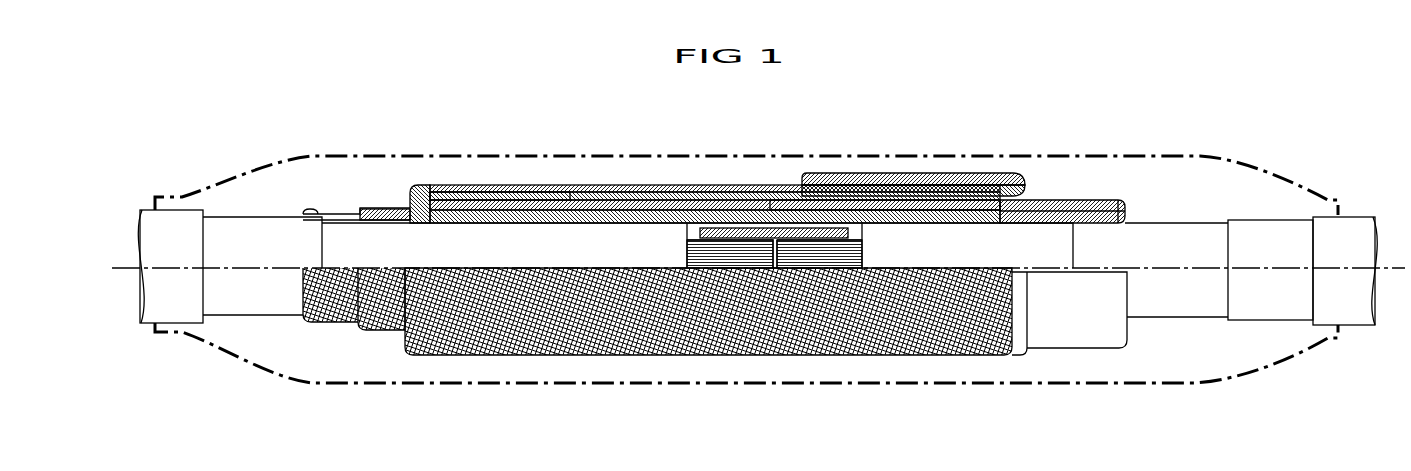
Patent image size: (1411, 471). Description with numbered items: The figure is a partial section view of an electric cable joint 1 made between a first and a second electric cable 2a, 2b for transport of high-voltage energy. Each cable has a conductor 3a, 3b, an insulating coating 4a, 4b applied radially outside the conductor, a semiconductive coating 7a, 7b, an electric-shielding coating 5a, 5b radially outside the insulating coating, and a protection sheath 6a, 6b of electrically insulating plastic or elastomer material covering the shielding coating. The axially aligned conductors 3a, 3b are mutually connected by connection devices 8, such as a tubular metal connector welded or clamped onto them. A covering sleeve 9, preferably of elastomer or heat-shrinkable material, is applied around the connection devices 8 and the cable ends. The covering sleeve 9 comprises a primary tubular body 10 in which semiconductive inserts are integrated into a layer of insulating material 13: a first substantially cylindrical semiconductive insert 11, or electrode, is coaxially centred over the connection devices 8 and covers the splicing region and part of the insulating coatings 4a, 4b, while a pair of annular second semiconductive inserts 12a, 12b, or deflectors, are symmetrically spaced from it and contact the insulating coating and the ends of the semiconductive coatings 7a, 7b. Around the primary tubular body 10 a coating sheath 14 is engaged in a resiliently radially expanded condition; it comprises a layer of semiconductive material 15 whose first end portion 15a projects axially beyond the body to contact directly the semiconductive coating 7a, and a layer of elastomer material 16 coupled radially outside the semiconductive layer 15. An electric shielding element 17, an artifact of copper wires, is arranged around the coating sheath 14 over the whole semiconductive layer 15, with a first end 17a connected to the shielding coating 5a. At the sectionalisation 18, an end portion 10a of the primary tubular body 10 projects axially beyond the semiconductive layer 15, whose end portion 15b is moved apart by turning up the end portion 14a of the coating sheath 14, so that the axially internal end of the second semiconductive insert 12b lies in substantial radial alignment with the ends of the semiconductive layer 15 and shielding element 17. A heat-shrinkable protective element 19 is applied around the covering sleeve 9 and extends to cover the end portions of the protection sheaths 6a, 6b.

The electric cable joint 1 is at (226, 137).
The first electric cable 2a is at (146, 229).
The second electric cable 2b is at (1353, 219).
The conductor 3a is at (733, 262).
The conductor 3b is at (837, 260).
The insulating coating 4a is at (630, 253).
The insulating coating 4b is at (1037, 245).
The electric-shielding coating 5a is at (252, 293).
The electric-shielding coating 5b is at (1263, 298).
The protection sheath 6a is at (175, 300).
The protection sheath 6b is at (1353, 308).
The semiconductive coating 7a is at (336, 238).
The semiconductive coating 7b is at (1177, 300).
The connection devices 8 is at (736, 205).
The covering sleeve 9 is at (503, 368).
The primary tubular body 10 is at (571, 235).
The end portion of the primary tubular body 10a is at (1085, 205).
The first semiconductive insert 11 is at (613, 210).
The second semiconductive insert 12a is at (492, 197).
The second semiconductive insert 12b is at (1125, 203).
The layer of insulating material 13 is at (778, 195).
The coating sheath 14 is at (516, 222).
The end portion of the coating sheath 14a is at (882, 178).
The layer of semiconductive material 15 is at (556, 190).
The first end portion of the semiconductive layer 15a is at (383, 210).
The end portion of the semiconductive layer 15b is at (985, 180).
The layer of elastomer material 16 is at (648, 195).
The electric shielding element 17 is at (678, 190).
The first end of the electric shielding element 17a is at (301, 211).
The sectionalisation 18 is at (1050, 183).
The protective element 19 is at (428, 152).